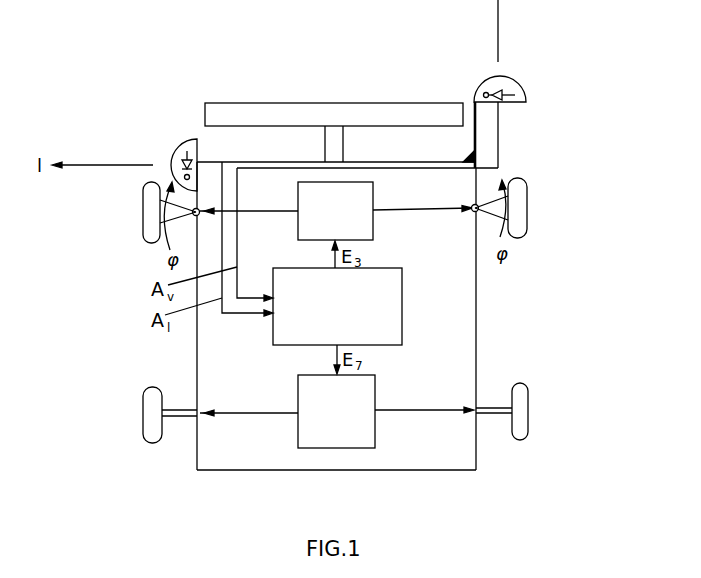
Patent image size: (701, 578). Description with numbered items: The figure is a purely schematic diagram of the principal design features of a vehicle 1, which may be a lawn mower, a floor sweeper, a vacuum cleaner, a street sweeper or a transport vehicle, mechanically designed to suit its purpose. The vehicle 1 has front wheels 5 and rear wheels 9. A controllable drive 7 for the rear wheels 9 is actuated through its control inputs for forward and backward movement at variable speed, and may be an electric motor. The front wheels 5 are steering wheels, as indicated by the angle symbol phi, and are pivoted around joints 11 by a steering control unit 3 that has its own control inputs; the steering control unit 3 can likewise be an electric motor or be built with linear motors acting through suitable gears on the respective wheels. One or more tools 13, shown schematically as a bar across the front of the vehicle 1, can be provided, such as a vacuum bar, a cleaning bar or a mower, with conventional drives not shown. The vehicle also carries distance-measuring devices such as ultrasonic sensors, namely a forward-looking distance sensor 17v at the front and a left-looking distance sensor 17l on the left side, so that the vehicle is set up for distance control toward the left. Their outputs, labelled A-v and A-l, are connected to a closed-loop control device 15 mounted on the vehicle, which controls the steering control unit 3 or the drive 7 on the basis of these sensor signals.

The vehicle 1 is at (492, 157).
The steering control unit 3 is at (357, 182).
The front wheels 5 is at (522, 197).
The controllable drive 7 is at (347, 449).
The rear wheels 9 is at (520, 407).
The joints 11 is at (477, 213).
The tools 13 is at (328, 112).
The closed-loop control device 15 is at (402, 307).
The left-looking distance sensor 17l is at (175, 158).
The forward-looking distance sensor 17v is at (512, 80).